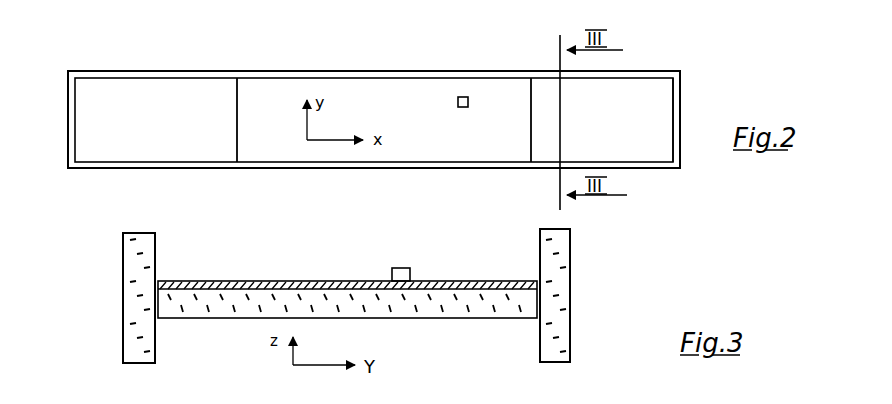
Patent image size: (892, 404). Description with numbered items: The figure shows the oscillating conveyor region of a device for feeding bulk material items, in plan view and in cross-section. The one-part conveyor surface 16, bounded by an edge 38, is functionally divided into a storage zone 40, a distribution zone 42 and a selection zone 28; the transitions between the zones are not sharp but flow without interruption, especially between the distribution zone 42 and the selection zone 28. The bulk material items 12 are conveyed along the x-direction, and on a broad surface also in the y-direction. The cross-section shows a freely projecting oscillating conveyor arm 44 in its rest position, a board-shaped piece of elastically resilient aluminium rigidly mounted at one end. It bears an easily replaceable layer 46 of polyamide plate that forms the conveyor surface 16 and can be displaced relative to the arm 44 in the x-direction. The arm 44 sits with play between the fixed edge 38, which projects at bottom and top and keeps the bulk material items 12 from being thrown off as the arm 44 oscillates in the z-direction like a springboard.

In FIG. 2, the bulk material items 12 is at (468, 97).
In FIG. 3, the bulk material items 12 is at (405, 266).
In FIG. 2, the conveyor surface 16 is at (115, 147).
In FIG. 3, the conveyor surface 16 is at (200, 283).
In FIG. 2, the selection zone 28 is at (627, 92).
In FIG. 2, the edge 38 is at (128, 72).
In FIG. 3, the edge 38 is at (130, 270).
In FIG. 2, the storage zone 40 is at (177, 92).
In FIG. 2, the distribution zone 42 is at (407, 95).
In FIG. 3, the oscillating conveyor arm 44 is at (470, 304).
In FIG. 3, the layer 46 is at (305, 283).